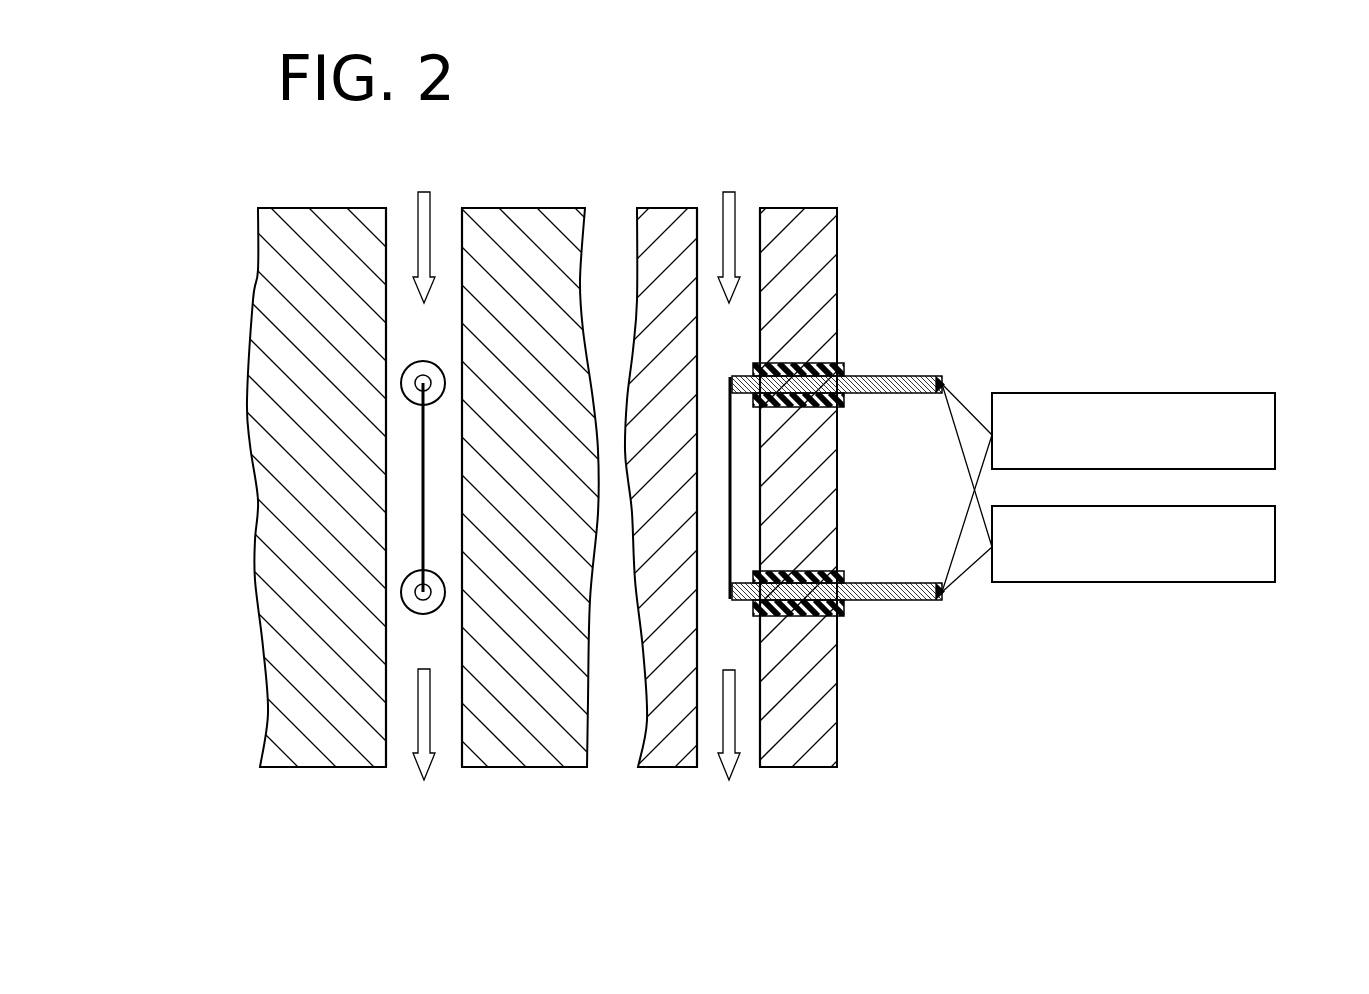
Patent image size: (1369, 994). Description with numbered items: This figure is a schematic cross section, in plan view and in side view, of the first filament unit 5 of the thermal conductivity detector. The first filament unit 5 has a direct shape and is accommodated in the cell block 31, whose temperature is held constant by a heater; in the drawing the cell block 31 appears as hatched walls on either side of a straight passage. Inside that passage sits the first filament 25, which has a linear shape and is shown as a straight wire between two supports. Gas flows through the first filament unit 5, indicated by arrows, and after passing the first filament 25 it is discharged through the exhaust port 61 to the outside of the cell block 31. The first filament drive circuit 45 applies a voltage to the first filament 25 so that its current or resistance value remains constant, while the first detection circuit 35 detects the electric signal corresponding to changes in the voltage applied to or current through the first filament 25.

The first filament unit 5 is at (397, 457).
The first filament 25 is at (422, 497).
The cell block 31 is at (538, 212).
The first detection circuit 35 is at (1133, 585).
The first filament drive circuit 45 is at (1133, 393).
The exhaust port 61 is at (444, 760).